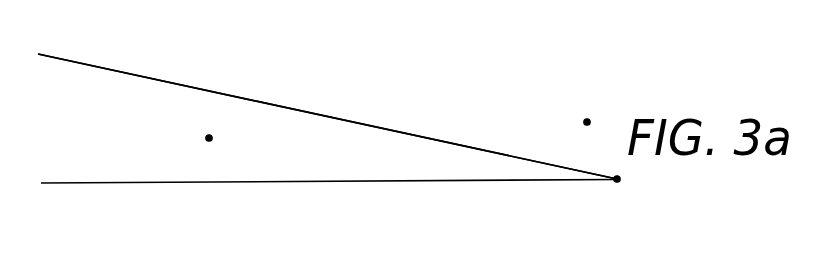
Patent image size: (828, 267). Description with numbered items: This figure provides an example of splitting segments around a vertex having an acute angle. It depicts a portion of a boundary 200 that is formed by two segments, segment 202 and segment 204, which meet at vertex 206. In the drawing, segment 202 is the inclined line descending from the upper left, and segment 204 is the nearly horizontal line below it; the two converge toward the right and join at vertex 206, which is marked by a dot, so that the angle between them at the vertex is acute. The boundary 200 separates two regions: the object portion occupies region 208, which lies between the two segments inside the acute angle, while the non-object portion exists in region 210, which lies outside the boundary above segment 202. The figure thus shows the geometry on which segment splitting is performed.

The boundary 200 is at (76, 60).
The segment 202 is at (326, 116).
The segment 204 is at (452, 181).
The vertex 206 is at (620, 180).
The region 208 is at (209, 138).
The region 210 is at (587, 122).